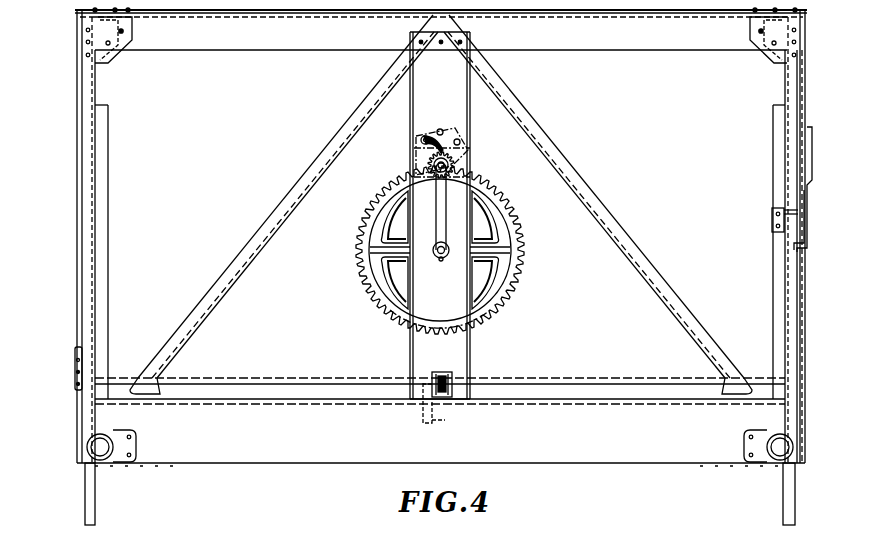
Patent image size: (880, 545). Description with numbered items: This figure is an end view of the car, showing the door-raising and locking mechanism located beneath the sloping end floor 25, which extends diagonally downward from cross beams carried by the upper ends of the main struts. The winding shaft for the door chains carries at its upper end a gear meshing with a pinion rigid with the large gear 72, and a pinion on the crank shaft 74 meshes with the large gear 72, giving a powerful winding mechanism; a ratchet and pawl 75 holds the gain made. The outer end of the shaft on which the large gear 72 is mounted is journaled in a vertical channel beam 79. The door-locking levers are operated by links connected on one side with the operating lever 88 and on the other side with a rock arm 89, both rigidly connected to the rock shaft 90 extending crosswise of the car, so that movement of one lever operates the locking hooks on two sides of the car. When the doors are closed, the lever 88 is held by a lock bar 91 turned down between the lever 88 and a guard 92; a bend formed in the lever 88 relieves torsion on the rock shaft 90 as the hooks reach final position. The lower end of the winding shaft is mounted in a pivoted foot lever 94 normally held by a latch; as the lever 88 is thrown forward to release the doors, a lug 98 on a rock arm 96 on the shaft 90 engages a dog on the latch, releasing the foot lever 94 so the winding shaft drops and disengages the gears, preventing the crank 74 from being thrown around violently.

The sloping end floor 25 is at (441, 266).
The large gear 72 is at (522, 236).
The crank shaft 74 is at (446, 215).
The ratchet and pawl 75 is at (422, 139).
The vertical channel beam 79 is at (440, 215).
The operating lever 88 is at (805, 296).
The rock arm 89 is at (77, 372).
The rock shaft 90 is at (440, 382).
The lock bar 91 is at (780, 208).
The guard 92 is at (807, 205).
The pivoted foot lever 94 is at (455, 381).
The rock arm 96 is at (423, 409).
The lug 98 is at (446, 421).